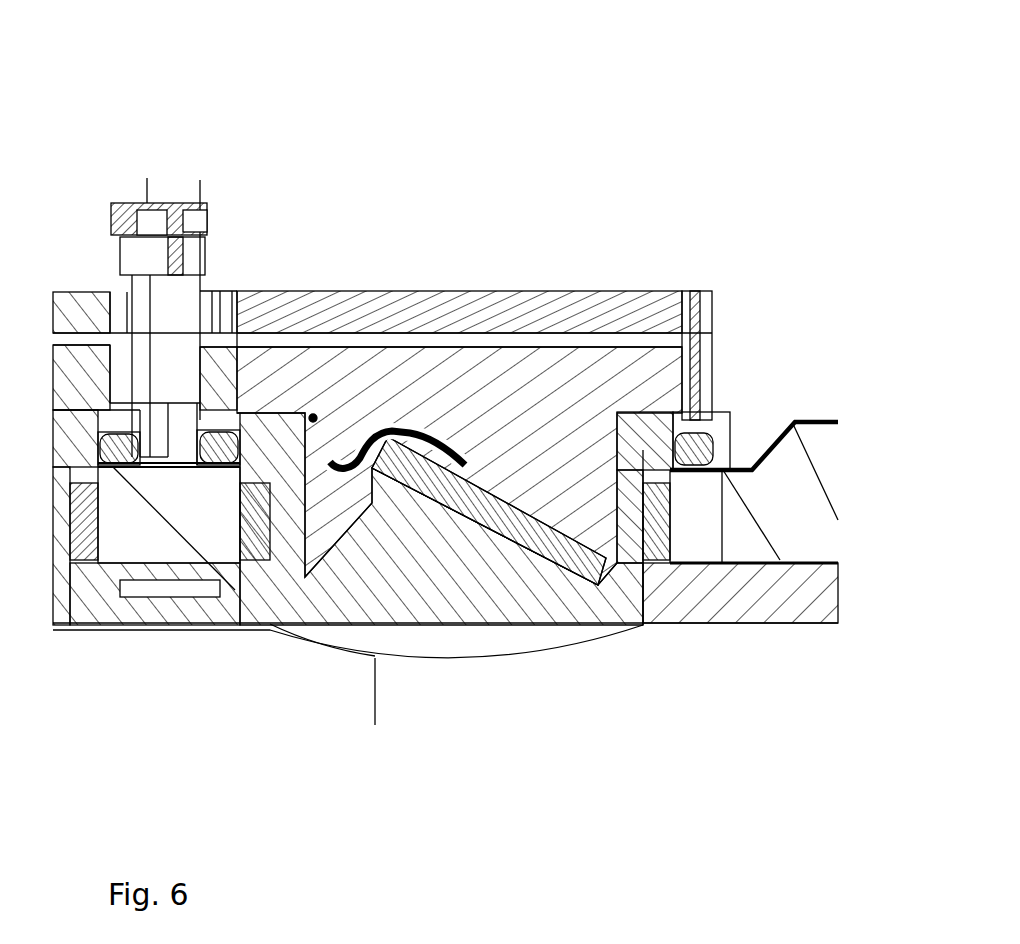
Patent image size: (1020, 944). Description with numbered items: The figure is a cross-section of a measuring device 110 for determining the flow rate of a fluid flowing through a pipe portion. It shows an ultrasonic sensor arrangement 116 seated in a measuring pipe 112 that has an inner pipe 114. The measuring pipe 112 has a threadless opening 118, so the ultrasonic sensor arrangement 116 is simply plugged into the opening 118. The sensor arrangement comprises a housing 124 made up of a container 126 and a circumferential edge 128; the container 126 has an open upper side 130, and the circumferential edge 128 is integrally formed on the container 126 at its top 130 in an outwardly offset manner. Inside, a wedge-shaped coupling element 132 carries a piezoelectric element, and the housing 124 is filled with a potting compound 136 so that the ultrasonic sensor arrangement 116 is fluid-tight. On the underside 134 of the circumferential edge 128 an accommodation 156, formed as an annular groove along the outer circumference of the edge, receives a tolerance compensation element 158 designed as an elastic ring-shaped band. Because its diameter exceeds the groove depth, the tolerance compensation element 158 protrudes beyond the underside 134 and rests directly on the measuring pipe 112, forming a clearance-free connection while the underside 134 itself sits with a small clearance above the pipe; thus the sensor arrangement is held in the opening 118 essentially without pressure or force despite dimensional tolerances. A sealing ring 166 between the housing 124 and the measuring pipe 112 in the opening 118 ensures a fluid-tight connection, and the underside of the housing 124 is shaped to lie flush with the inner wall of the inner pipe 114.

The measuring device 110 is at (592, 134).
The measuring pipe 112 is at (805, 478).
The inner pipe 114 is at (782, 625).
The ultrasonic sensor arrangement 116 is at (376, 262).
The opening 118 is at (643, 625).
The housing 124 is at (283, 632).
The container 126 is at (708, 372).
The circumferential edge 128 is at (700, 291).
The open upper side 130 is at (640, 397).
The wedge-shaped coupling element 132 is at (517, 583).
The underside of the circumferential edge 134 is at (188, 467).
The potting compound 136 is at (503, 365).
The accommodation 156 is at (240, 448).
The tolerance compensation element 158 is at (226, 430).
The sealing ring 166 is at (253, 535).